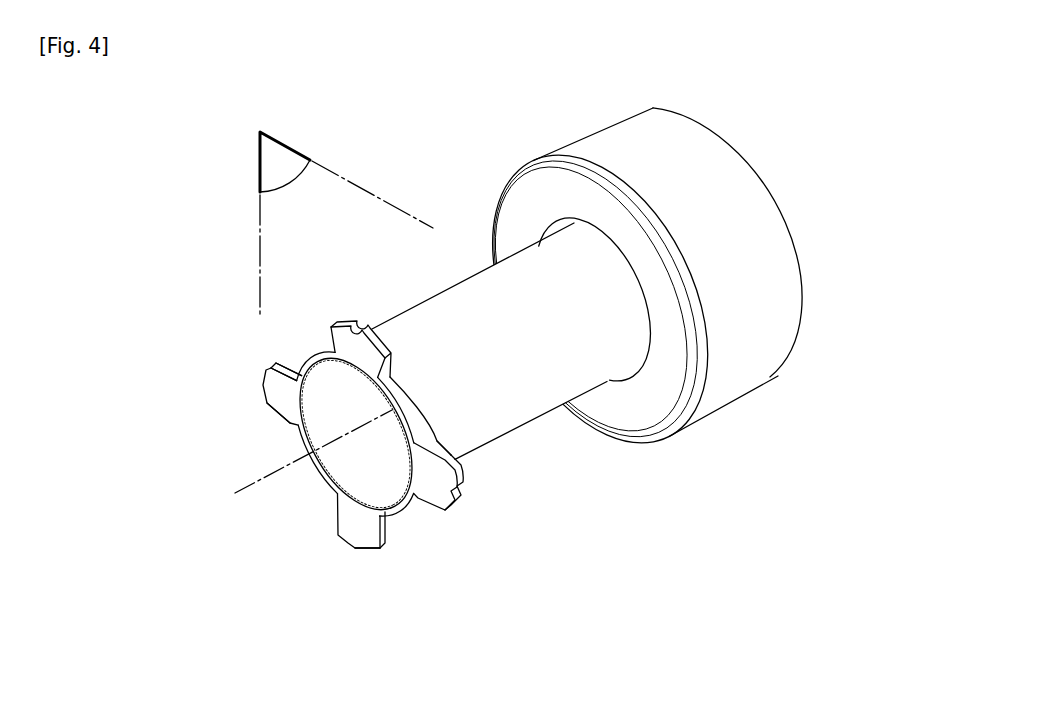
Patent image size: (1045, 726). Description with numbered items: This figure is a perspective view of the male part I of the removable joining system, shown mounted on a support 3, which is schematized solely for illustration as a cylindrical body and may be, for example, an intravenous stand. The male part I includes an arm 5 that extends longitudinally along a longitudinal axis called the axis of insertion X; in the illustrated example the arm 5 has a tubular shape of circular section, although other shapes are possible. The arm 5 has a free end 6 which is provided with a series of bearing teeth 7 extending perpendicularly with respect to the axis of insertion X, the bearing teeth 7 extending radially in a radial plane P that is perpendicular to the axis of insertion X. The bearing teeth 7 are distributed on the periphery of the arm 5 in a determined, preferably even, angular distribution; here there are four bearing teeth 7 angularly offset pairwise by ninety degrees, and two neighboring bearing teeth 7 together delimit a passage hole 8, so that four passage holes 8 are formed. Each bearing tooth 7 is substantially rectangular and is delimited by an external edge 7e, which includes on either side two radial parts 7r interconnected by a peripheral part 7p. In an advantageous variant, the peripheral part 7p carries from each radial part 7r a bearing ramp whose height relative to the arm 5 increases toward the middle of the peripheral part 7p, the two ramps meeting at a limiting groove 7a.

The support 3 is at (757, 421).
The arm 5 is at (461, 303).
The free end 6 is at (340, 447).
The bearing tooth 7 is at (275, 400).
The limiting groove 7a is at (362, 329).
The peripheral part 7p is at (453, 507).
The external edge 7e is at (368, 556).
The radial part 7r is at (281, 360).
The passage hole 8 is at (288, 350).
The axis of insertion X is at (233, 493).
The radial plane P is at (346, 224).
The male part I is at (586, 497).